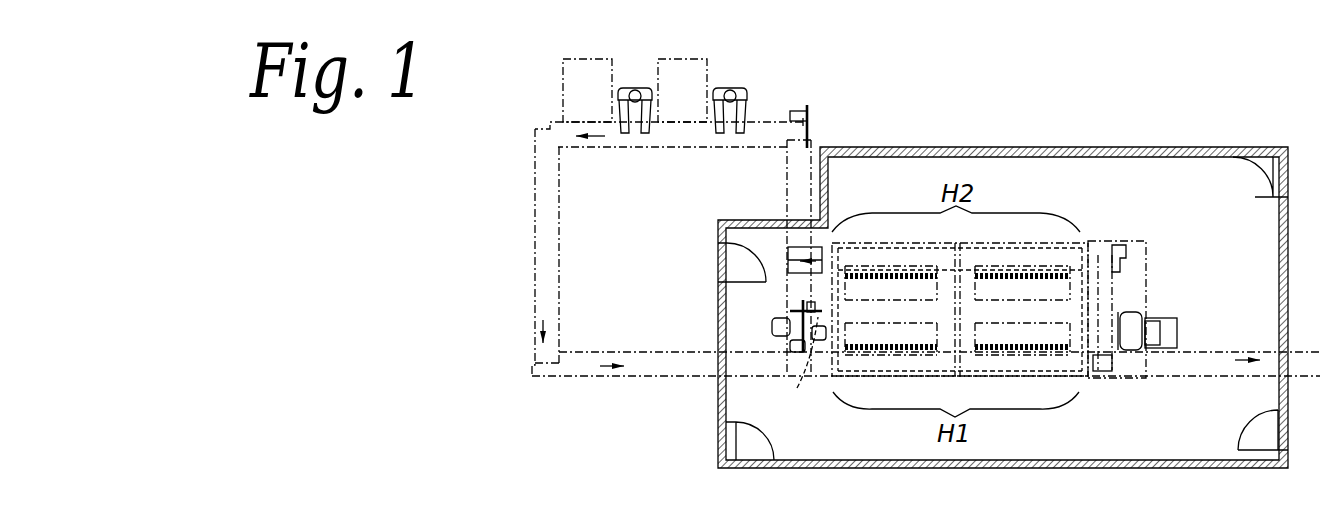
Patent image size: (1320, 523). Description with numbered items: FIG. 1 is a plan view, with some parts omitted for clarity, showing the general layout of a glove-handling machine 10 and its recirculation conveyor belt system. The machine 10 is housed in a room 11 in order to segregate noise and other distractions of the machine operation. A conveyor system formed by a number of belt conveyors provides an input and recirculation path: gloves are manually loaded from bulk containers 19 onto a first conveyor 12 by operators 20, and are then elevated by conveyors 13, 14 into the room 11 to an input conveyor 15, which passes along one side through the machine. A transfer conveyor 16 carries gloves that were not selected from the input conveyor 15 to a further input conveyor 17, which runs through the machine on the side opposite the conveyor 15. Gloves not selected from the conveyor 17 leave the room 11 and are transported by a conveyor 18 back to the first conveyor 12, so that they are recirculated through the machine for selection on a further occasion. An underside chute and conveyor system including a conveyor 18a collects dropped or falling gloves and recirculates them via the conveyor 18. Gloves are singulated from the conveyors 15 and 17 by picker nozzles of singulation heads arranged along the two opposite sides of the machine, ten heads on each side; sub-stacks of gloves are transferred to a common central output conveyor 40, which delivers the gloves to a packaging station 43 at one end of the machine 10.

The machine 10 is at (1003, 279).
The room 11 is at (1172, 147).
The first conveyor 12 is at (668, 147).
The conveyor 13 is at (546, 252).
The conveyor 14 is at (675, 365).
The input conveyor 15 is at (868, 365).
The transfer conveyor 16 is at (1098, 287).
The further input conveyor 17 is at (846, 262).
The conveyor 18 is at (797, 200).
The conveyor 18a is at (815, 378).
The bulk containers 19 is at (562, 88).
The operators 20 is at (633, 88).
The central output conveyor 40 is at (1068, 313).
The packaging station 43 is at (1195, 330).